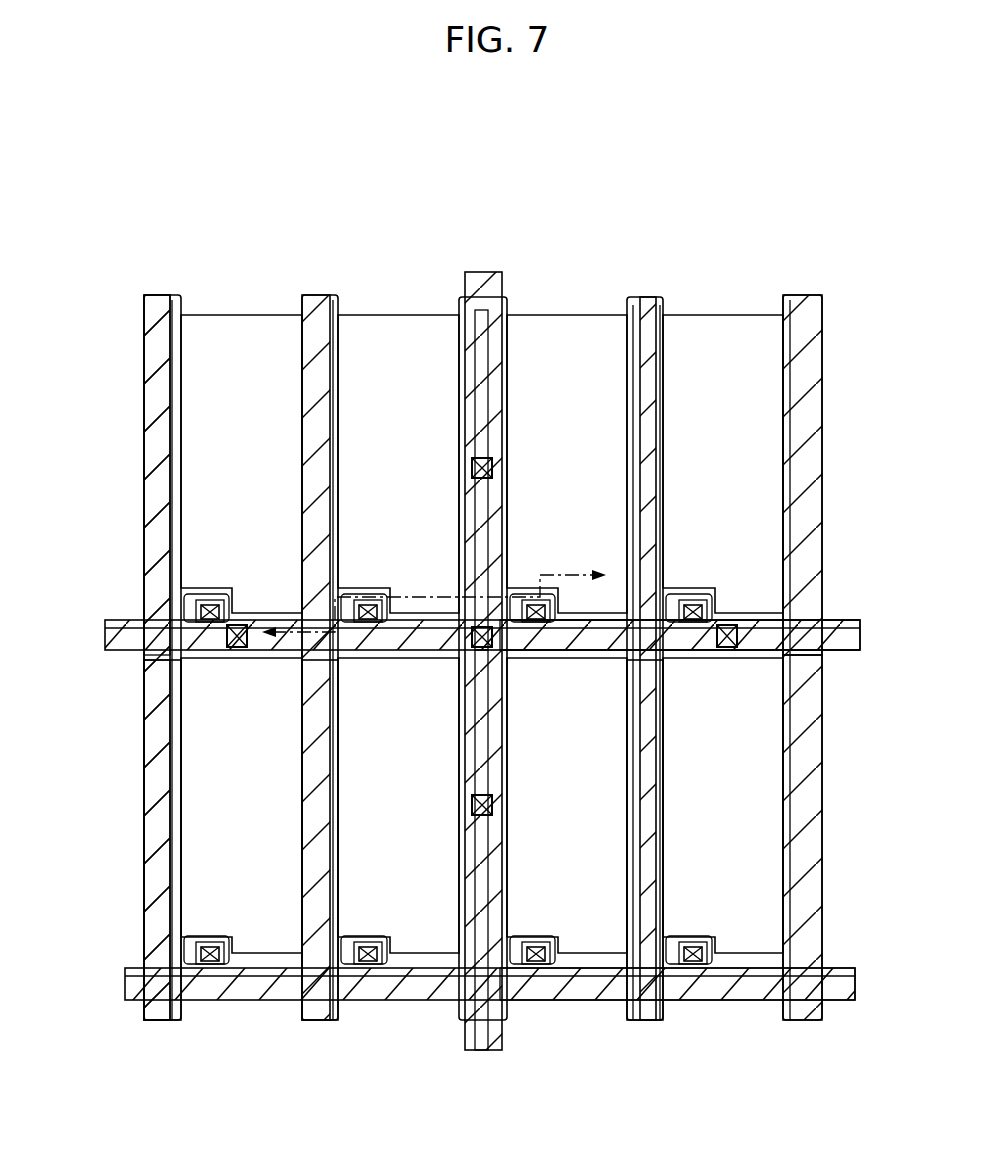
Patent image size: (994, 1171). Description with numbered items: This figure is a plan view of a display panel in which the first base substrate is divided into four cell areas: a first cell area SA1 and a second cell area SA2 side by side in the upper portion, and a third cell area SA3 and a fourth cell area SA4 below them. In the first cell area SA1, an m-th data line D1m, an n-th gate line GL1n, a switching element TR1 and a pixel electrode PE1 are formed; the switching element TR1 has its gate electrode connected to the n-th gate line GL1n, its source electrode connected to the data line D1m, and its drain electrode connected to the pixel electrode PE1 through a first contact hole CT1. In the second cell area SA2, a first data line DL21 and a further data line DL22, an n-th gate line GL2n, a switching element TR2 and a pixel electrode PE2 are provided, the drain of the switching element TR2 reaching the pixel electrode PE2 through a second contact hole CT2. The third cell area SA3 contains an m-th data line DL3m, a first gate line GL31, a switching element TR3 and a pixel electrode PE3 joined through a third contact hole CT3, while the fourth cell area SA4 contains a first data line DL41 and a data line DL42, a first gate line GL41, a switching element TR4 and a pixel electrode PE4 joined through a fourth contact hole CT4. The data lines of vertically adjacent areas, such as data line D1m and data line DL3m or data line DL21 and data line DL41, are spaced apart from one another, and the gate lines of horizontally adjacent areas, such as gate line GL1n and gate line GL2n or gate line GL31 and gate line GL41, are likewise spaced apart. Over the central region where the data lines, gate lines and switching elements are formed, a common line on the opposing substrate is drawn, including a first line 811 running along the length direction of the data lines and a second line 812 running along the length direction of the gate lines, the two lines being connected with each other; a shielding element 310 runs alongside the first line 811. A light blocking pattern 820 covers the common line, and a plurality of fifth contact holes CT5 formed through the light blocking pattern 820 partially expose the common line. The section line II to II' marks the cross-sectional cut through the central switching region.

The m-th data line D1m is at (322, 300).
The pixel electrode PE1 is at (368, 315).
The shielding electrode 310 is at (462, 300).
The first line 811 is at (482, 272).
The first data line DL21 is at (485, 310).
The pixel electrode PE2 is at (592, 315).
The data line DL22 is at (648, 310).
The first cell area SA1 is at (128, 440).
The second cell area SA2 is at (835, 440).
The third cell area SA3 is at (128, 790).
The fourth cell area SA4 is at (835, 790).
The first contact hole CT1 is at (362, 604).
The second contact hole CT2 is at (535, 604).
The third contact hole CT3 is at (362, 946).
The fourth contact hole CT4 is at (535, 946).
The fifth contact hole CT5 is at (494, 468).
The section line II is at (429, 639).
The section line II' is at (610, 575).
The light blocking pattern 820 is at (842, 620).
The second line 812 is at (842, 650).
The n-th gate line GL1n is at (125, 632).
The n-th gate line GL2n is at (845, 640).
The first gate line GL31 is at (125, 978).
The first gate line GL41 is at (845, 978).
The switching element TR1 is at (372, 650).
The switching element TR2 is at (545, 650).
The switching element TR3 is at (374, 972).
The switching element TR4 is at (544, 972).
The m-th data line DL3m is at (320, 1018).
The first data line DL41 is at (481, 1050).
The data line DL42 is at (645, 1018).
The pixel electrode PE3 is at (252, 1002).
The pixel electrode PE4 is at (568, 1002).